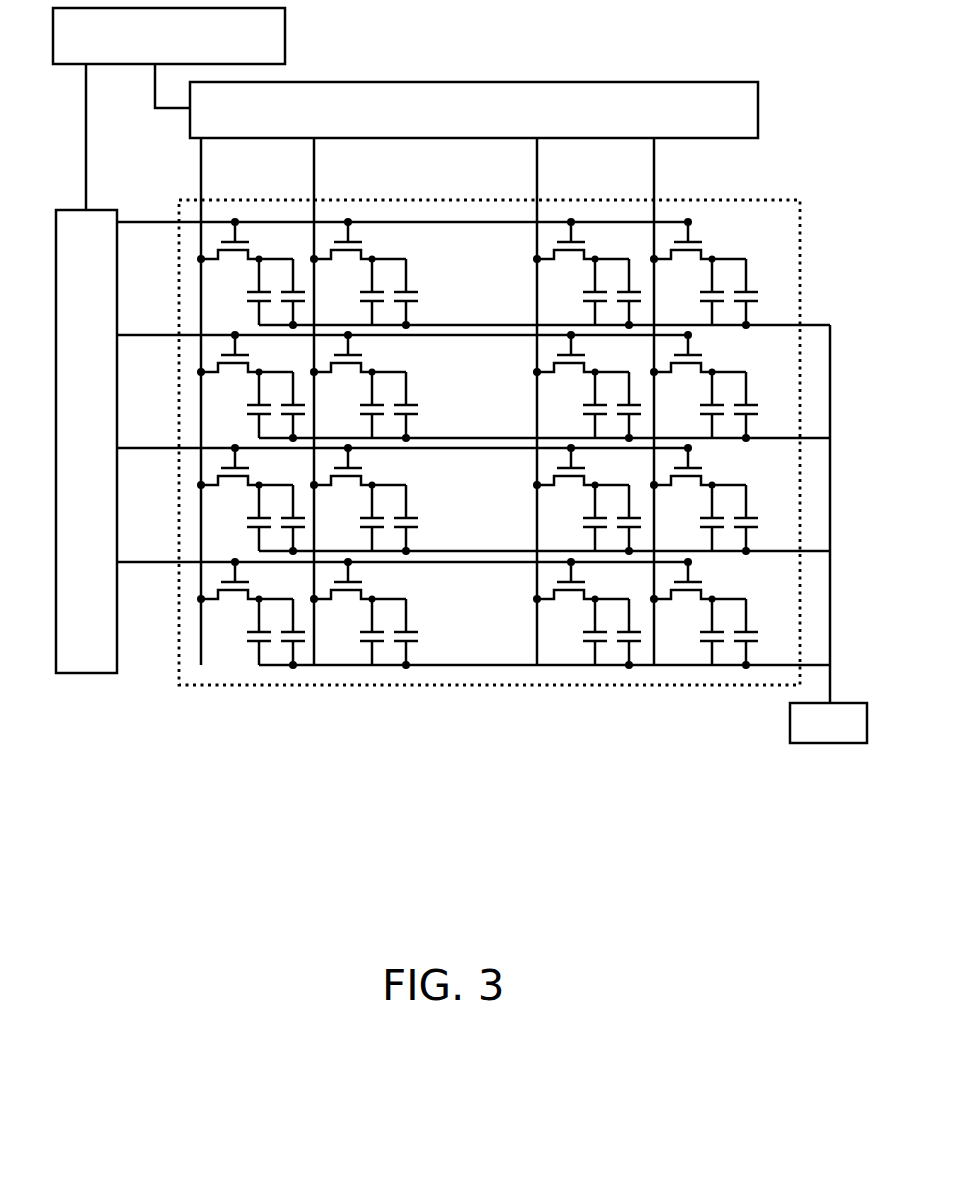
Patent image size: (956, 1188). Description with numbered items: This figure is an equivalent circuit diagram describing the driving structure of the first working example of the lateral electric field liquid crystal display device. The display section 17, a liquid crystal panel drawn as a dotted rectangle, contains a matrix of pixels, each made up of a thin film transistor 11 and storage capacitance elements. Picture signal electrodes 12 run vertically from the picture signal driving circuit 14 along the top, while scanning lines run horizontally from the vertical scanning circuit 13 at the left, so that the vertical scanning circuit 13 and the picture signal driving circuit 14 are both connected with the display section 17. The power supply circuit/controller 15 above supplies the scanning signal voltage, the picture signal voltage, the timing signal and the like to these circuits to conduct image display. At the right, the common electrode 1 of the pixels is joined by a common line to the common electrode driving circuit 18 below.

The common electrode 1 is at (828, 325).
The thin film transistor 11 is at (253, 243).
The picture signal electrode 12 is at (190, 166).
The vertical scanning circuit 13 is at (372, 441).
The picture signal driving circuit 14 is at (474, 110).
The power supply circuit/controller 15 is at (169, 109).
The display section 17 is at (506, 686).
The common electrode driving circuit 18 is at (828, 720).